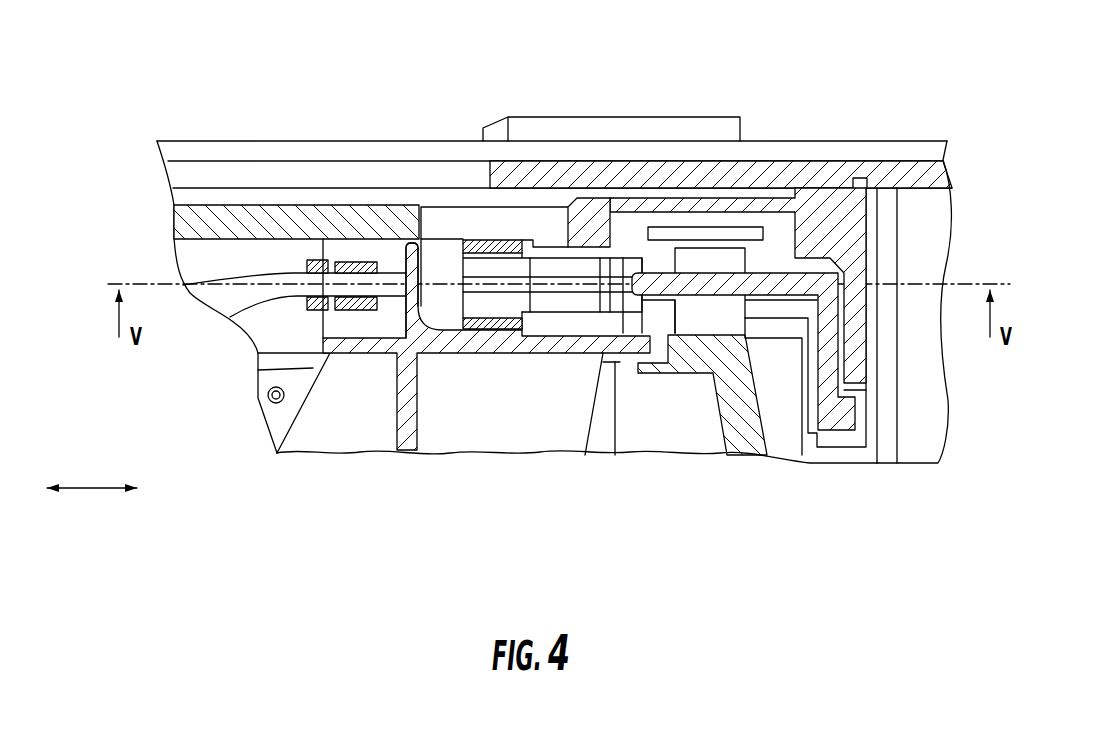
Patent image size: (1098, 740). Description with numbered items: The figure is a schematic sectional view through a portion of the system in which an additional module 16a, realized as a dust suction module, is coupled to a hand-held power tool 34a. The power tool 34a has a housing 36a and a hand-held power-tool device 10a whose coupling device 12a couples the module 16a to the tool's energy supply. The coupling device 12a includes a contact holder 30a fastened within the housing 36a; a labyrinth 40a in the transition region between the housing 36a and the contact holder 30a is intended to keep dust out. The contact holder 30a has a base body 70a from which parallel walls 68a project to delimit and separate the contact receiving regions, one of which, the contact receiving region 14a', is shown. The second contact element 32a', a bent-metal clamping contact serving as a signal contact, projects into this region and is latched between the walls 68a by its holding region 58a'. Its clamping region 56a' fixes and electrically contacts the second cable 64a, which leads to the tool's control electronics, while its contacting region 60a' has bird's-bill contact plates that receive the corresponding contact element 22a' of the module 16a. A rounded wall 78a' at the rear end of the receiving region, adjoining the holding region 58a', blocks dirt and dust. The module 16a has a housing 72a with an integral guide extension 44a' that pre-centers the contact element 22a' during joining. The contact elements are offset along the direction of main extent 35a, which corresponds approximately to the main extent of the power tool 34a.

The hand-held power tool 34a is at (127, 107).
The housing 36a is at (243, 220).
The second cable 64a is at (290, 270).
The wall 78a' is at (375, 211).
The coupling device 12a is at (433, 192).
The second contact element 32a' is at (494, 187).
The hand-held power-tool device 10a is at (580, 130).
The contacting region 60a' is at (603, 203).
The guide extension 44a' is at (738, 220).
The housing 72a is at (913, 177).
The additional module 16a is at (973, 173).
The corresponding contact element 22a' is at (827, 328).
The base body 70a is at (307, 432).
The clamping region 56a' is at (355, 394).
The holding region 58a' is at (474, 380).
The contact holder 30a is at (517, 470).
The walls 68a is at (620, 353).
The labyrinth 40a is at (638, 392).
The contact receiving region 14a' is at (727, 382).
The direction of main extent 35a is at (90, 488).